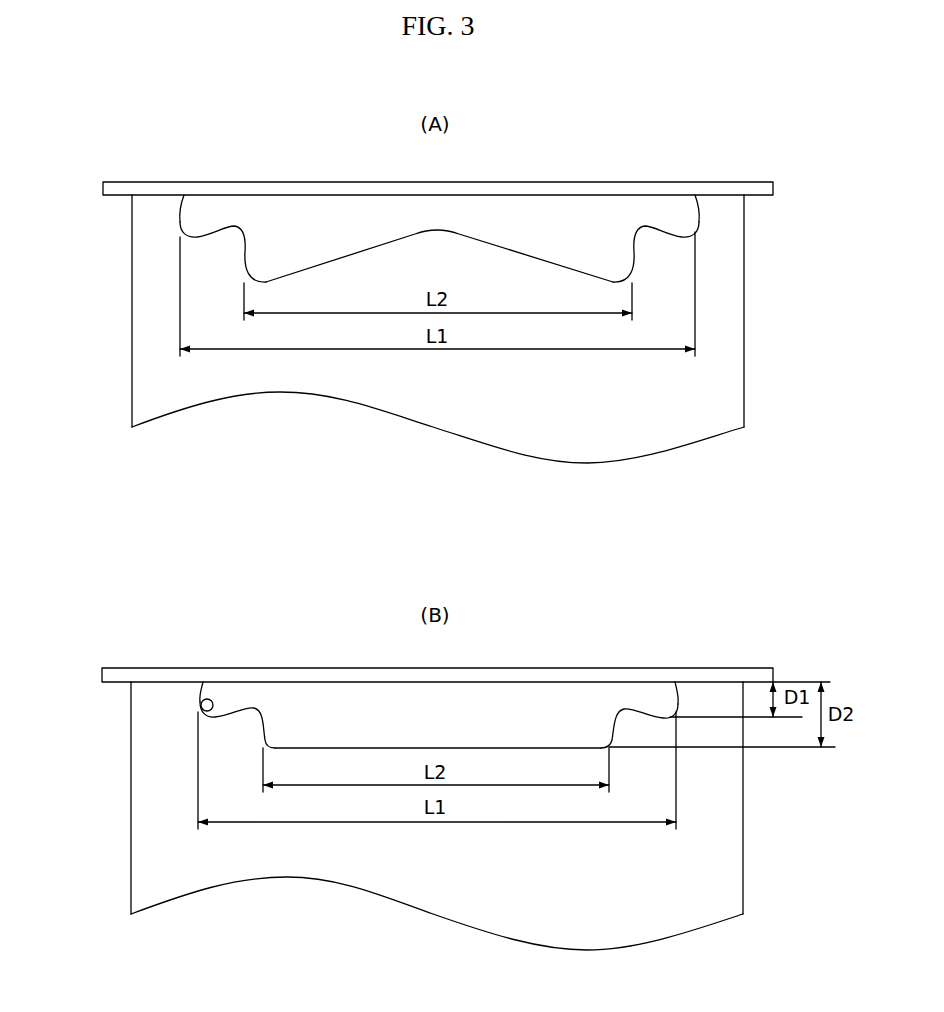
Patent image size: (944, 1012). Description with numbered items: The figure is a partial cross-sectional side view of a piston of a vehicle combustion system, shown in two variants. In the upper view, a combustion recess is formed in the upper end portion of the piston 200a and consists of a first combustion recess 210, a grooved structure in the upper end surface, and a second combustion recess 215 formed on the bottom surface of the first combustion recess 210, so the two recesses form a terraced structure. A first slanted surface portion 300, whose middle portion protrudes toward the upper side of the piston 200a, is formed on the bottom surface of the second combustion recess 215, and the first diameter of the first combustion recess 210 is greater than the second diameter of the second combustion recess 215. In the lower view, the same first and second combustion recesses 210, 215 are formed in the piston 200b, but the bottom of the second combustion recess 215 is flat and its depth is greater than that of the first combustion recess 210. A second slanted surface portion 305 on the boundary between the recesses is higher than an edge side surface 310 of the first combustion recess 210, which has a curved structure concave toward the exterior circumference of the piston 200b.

The piston 200a is at (143, 312).
The piston 200b is at (140, 780).
The first combustion recess 210 is at (681, 220).
The second combustion recess 215 is at (613, 262).
The first slanted surface portion 300 is at (447, 242).
The second slanted surface portion 305 is at (250, 705).
The edge side surface 310 is at (198, 697).